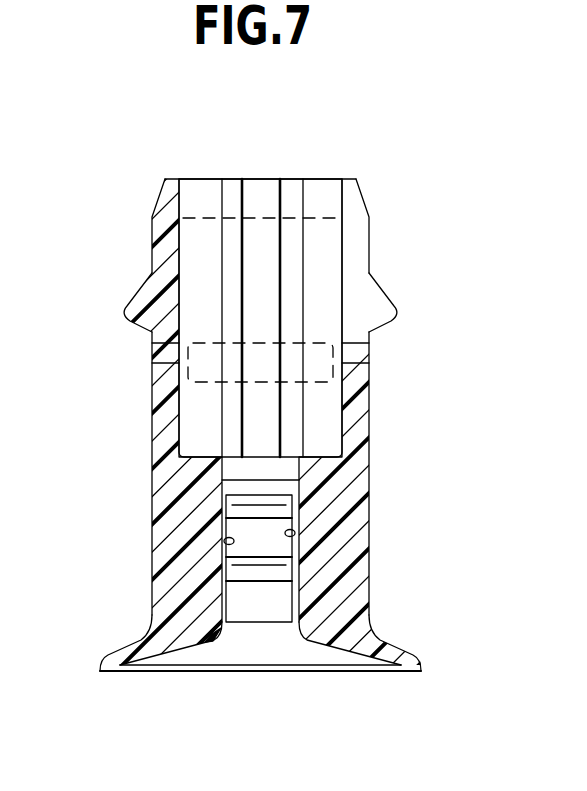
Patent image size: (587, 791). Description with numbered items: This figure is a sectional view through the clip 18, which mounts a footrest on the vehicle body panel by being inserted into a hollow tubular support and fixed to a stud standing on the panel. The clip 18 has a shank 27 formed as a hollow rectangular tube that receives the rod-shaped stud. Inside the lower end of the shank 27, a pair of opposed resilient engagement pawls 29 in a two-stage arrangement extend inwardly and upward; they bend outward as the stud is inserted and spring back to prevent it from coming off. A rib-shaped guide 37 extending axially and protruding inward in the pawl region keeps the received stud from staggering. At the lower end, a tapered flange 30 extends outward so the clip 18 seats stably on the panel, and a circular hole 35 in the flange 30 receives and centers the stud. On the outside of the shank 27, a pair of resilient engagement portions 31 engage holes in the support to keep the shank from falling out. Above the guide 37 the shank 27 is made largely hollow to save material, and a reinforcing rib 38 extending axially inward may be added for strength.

The clip 18 is at (403, 196).
The shank 27 is at (372, 405).
The resilient engagement pawl 29 is at (238, 505).
The flange 30 is at (404, 648).
The resilient engagement portion 31 is at (132, 307).
The circular hole 35 is at (214, 644).
The rib-shaped guide 37 is at (224, 540).
The reinforcing rib 38 is at (228, 201).